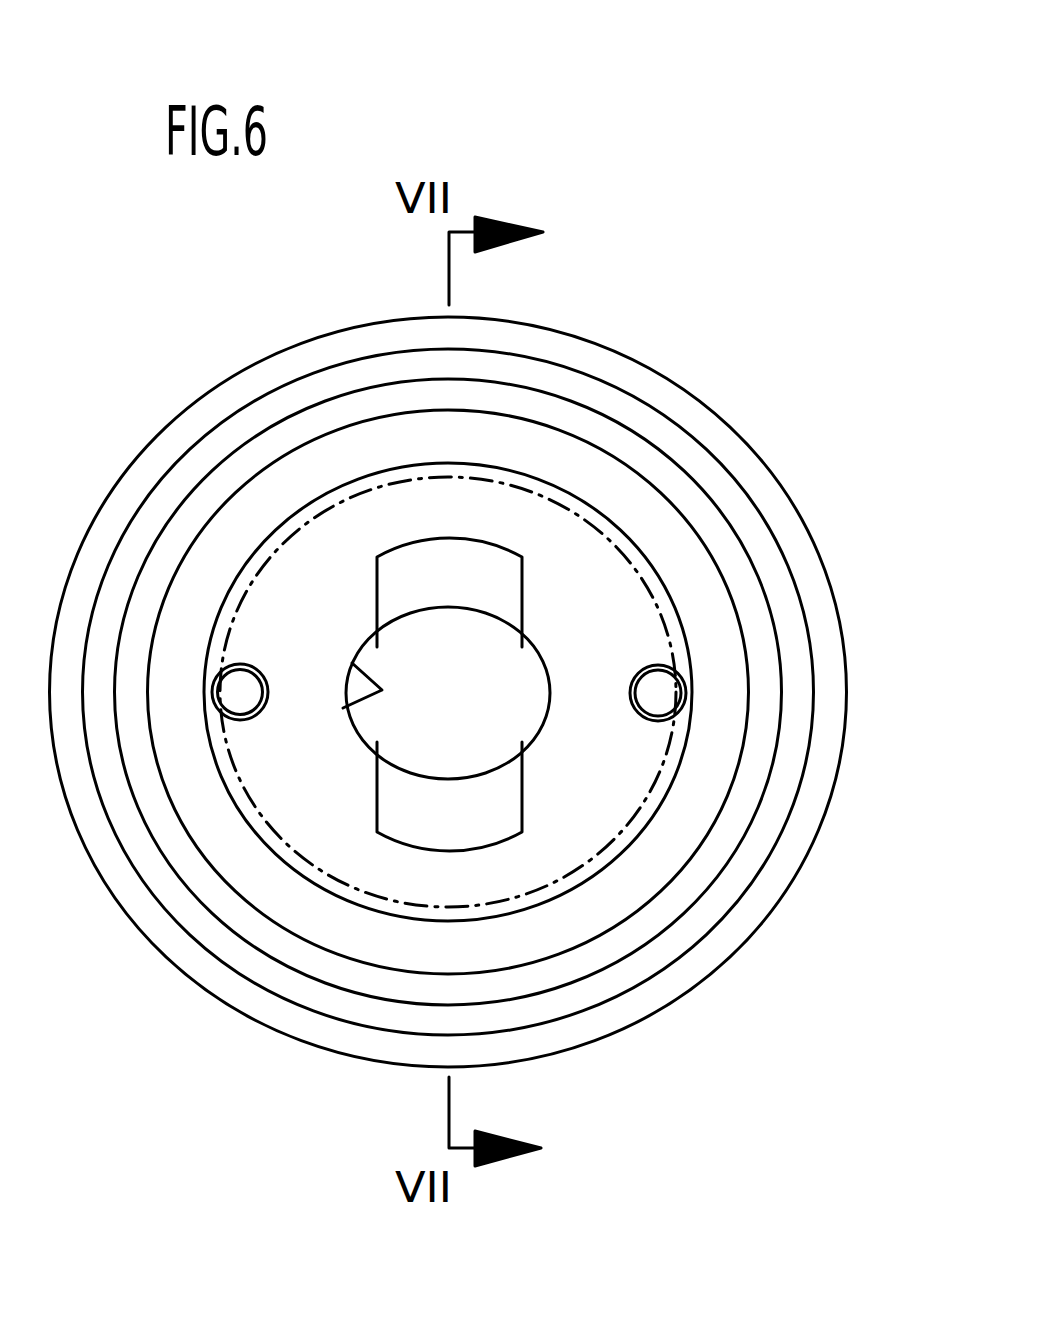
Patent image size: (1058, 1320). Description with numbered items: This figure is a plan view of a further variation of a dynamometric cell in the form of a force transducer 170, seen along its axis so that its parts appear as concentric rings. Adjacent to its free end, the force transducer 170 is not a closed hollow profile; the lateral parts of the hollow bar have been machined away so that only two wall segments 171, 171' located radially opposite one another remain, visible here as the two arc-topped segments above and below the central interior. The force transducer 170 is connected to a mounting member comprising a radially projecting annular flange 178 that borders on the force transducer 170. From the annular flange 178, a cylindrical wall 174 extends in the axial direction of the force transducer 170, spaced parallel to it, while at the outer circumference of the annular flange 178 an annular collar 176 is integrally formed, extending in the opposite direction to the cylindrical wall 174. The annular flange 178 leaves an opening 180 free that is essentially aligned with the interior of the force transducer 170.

The force transducer 170 is at (752, 386).
The wall segment 171 is at (496, 592).
The wall segment 171' is at (502, 796).
The cylindrical wall 174 is at (278, 448).
The annular collar 176 is at (822, 592).
The annular flange 178 is at (637, 755).
The opening 180 is at (360, 699).